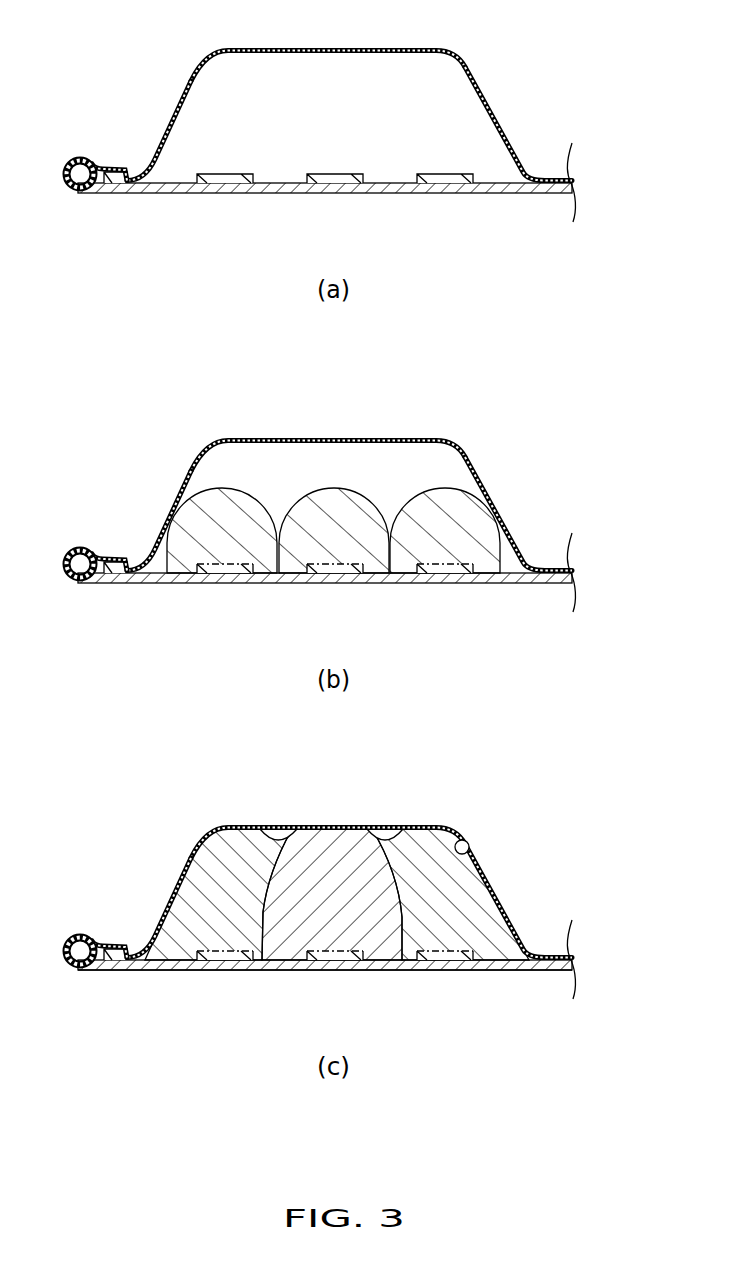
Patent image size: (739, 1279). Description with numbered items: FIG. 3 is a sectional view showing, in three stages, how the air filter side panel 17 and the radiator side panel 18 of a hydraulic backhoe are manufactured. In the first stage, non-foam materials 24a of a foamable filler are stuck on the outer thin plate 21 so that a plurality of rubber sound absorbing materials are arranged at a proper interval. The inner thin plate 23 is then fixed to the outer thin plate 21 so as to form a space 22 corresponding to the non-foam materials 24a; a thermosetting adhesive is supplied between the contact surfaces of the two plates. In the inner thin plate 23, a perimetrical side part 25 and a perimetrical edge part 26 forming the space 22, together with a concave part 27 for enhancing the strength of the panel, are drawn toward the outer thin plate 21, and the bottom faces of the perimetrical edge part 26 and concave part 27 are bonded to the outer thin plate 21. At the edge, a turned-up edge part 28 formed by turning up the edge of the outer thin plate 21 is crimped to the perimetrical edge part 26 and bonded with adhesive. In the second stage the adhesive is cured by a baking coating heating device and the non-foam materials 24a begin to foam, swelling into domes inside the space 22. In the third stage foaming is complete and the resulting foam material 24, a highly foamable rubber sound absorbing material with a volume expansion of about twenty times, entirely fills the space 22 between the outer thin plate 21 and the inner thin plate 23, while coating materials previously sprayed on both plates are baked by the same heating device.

The air filter side panel 17 is at (325, 1007).
The radiator side panel 18 is at (325, 1007).
The outer thin plate 21 is at (403, 194).
The space 22 is at (313, 485).
The inner thin plate 23 is at (335, 47).
The foam material 24 is at (340, 712).
The non-foam material 24a is at (466, 172).
The perimetrical side part 25 is at (171, 117).
The perimetrical edge part 26 is at (81, 154).
The concave part 27 is at (506, 138).
The turned-up edge part 28 is at (120, 171).